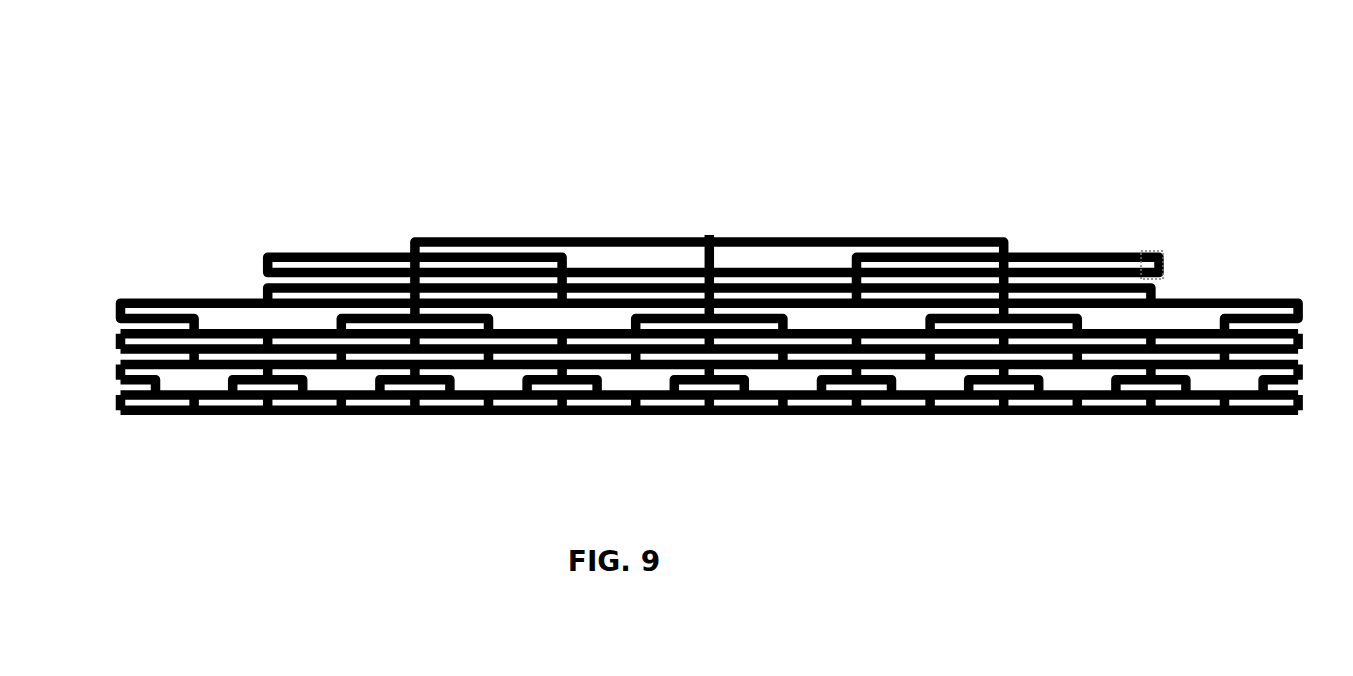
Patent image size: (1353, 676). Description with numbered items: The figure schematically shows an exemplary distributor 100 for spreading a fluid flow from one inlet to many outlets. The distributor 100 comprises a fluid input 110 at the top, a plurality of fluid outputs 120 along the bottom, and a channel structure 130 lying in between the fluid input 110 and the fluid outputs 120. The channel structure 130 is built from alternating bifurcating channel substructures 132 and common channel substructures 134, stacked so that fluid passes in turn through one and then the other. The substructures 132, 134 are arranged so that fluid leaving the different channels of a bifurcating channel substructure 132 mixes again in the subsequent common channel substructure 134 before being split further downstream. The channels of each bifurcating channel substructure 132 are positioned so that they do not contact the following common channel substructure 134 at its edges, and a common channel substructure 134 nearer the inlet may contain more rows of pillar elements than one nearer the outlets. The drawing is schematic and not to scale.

The distributor 100 is at (358, 119).
The fluid input 110 is at (700, 226).
The fluid outputs 120 is at (260, 407).
The channel structure 130 is at (1176, 221).
The bifurcating channel substructure 132 is at (362, 245).
The common channel substructure 134 is at (223, 296).